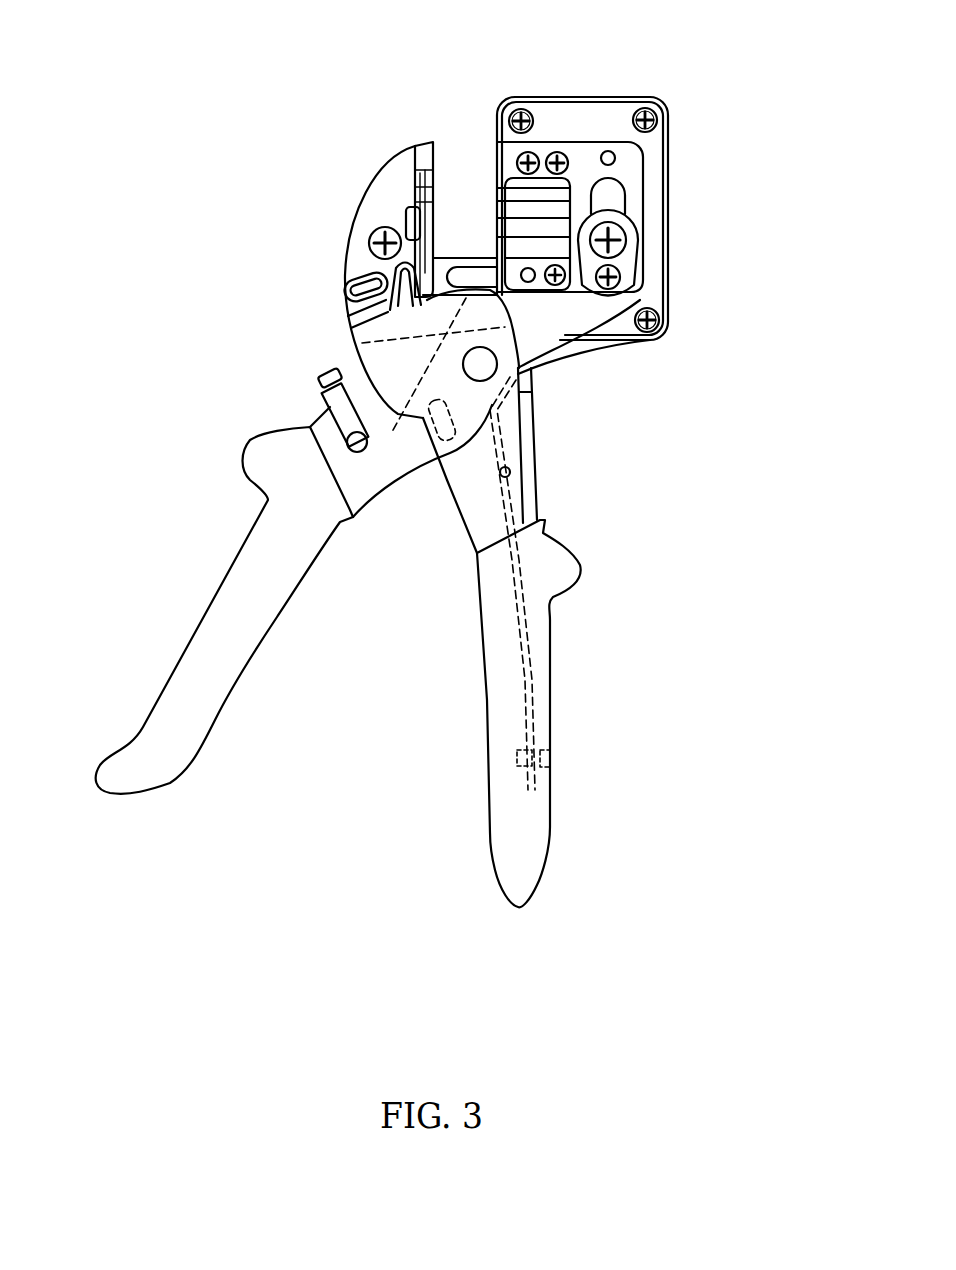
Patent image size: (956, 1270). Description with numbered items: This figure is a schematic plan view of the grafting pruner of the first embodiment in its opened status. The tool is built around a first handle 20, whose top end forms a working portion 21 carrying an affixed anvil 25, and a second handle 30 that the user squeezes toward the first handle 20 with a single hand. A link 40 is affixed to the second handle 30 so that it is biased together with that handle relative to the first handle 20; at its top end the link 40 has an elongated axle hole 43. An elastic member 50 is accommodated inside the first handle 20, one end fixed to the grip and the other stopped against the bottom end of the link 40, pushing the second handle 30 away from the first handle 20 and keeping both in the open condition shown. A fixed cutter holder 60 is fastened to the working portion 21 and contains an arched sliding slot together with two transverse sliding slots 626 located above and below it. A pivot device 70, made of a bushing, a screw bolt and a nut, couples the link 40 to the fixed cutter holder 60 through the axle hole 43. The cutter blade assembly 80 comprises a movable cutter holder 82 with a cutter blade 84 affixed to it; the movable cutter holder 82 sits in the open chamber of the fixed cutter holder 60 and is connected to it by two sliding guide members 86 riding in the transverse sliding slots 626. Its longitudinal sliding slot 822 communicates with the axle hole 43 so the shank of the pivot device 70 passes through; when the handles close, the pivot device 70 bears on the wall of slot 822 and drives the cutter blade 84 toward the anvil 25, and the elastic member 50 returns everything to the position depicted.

The first handle 20 is at (555, 842).
The working portion 21 is at (388, 185).
The anvil 25 is at (440, 140).
The second handle 30 is at (160, 800).
The link 40 is at (570, 310).
The axle hole 43 is at (627, 265).
The elastic member 50 is at (510, 507).
The fixed cutter holder 60 is at (655, 345).
The pivot device 70 is at (624, 224).
The cutter blade assembly 80 is at (564, 146).
The movable cutter holder 82 is at (580, 157).
The cutter blade 84 is at (538, 198).
The sliding guide members 86 is at (614, 150).
The longitudinal sliding slot 822 is at (623, 183).
The transverse sliding slots 626 is at (463, 273).